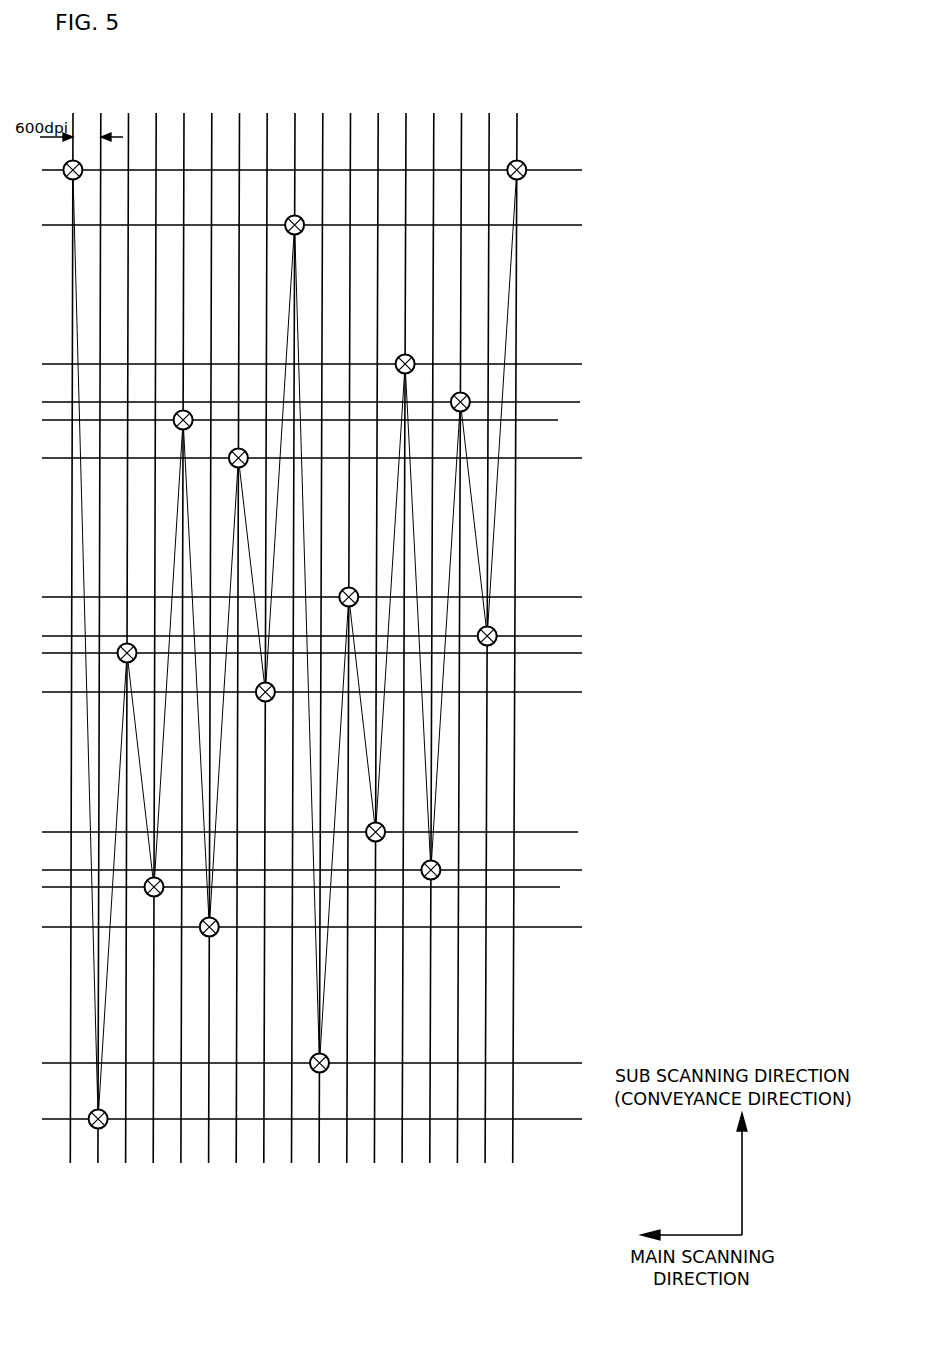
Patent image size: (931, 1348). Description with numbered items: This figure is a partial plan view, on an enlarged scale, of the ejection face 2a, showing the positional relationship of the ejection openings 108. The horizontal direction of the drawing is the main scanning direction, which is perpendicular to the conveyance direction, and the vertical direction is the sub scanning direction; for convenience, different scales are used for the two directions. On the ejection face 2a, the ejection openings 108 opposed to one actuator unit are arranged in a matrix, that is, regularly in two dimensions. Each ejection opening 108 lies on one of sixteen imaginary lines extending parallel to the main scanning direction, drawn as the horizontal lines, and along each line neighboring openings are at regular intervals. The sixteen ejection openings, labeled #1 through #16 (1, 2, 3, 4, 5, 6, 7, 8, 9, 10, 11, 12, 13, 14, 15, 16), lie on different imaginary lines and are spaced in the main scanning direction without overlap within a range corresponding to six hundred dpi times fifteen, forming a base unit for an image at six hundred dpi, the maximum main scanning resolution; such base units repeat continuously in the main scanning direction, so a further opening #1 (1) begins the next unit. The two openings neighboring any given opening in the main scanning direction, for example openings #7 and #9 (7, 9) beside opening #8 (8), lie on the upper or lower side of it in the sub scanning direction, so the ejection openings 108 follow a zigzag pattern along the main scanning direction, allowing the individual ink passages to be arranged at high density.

The ejection face 2a is at (413, 161).
The ejection opening 108 is at (528, 160).
The ejection opening # 1 is at (93, 181).
The ejection opening # 2 is at (96, 1133).
The ejection opening # 3 is at (121, 641).
The ejection opening # 4 is at (152, 902).
The ejection opening # 5 is at (182, 408).
The ejection opening # 6 is at (199, 942).
The ejection opening # 7 is at (237, 445).
The ejection opening # 8 is at (257, 708).
The ejection opening # 9 is at (311, 212).
The ejection opening # 10 is at (312, 1081).
The ejection opening # 11 is at (345, 583).
The ejection opening # 12 is at (375, 848).
The ejection opening # 13 is at (393, 351).
The ejection opening # 14 is at (430, 886).
The ejection opening # 15 is at (457, 390).
The ejection opening # 16 is at (487, 651).